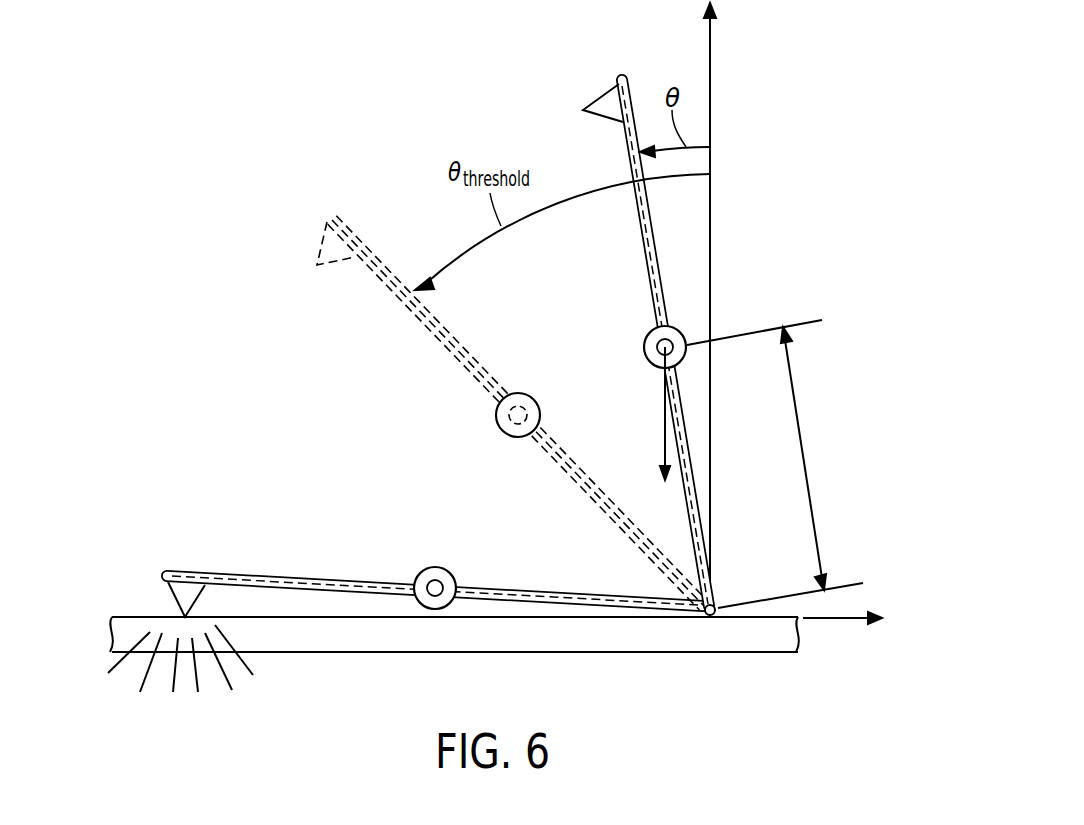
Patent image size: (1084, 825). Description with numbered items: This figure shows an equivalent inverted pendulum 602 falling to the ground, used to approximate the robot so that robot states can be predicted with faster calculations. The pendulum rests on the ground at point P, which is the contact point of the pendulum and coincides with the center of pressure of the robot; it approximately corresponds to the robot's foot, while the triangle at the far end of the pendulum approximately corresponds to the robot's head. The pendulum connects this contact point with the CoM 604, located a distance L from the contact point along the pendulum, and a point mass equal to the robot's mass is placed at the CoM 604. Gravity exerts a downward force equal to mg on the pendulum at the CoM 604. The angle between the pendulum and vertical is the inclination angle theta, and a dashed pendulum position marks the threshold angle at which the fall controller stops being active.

The arm / lever 602 is at (637, 233).
The pivot joint 604 is at (667, 330).
The gravitational force mg is at (662, 428).
The length from pivot to joint L is at (806, 457).
The pivot point P is at (710, 618).